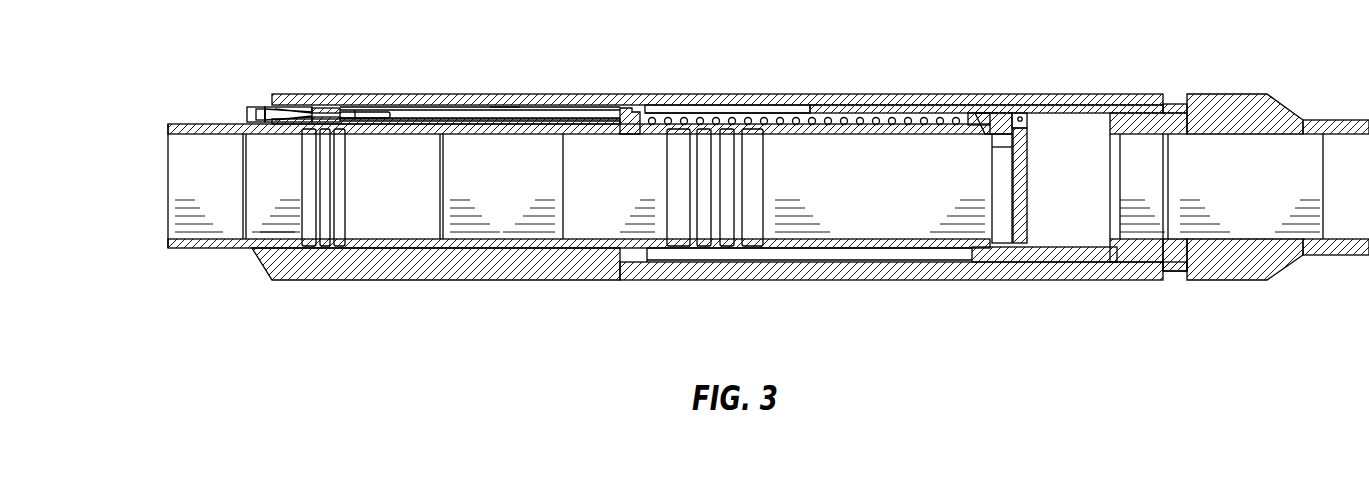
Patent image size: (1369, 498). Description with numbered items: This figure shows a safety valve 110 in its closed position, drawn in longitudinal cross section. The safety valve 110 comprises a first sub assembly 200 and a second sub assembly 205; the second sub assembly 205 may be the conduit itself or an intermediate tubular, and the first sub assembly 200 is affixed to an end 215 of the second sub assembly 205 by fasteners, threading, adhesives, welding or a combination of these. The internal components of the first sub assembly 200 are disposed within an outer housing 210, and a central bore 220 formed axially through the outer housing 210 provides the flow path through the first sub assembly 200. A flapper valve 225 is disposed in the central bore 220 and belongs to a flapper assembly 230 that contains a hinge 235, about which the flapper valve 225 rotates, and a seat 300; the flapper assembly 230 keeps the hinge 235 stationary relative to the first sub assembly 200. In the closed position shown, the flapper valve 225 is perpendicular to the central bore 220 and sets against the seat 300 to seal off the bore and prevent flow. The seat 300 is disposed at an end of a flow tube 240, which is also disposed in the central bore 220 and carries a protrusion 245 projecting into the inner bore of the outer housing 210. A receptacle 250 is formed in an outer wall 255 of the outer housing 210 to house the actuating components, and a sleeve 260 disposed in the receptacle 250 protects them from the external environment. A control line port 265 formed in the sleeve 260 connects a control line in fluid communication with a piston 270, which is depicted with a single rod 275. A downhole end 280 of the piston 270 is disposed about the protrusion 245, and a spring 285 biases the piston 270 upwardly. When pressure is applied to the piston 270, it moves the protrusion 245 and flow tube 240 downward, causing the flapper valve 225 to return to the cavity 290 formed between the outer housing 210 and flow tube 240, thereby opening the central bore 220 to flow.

The safety valve 110 is at (1110, 308).
The first sub assembly 200 is at (500, 281).
The second sub assembly 205 is at (1282, 120).
The outer housing 210 is at (313, 282).
The end 215 is at (1188, 98).
The central bore 220 is at (397, 168).
The flapper valve 225 is at (1025, 200).
The flapper assembly 230 is at (992, 113).
The hinge 235 is at (1035, 123).
The flow tube 240 is at (832, 258).
The protrusion 245 is at (647, 127).
The receptacle 250 is at (437, 103).
The outer wall 255 is at (742, 95).
The sleeve 260 is at (288, 102).
The control line port 265 is at (248, 111).
The piston 270 is at (372, 103).
The rod 275 is at (493, 110).
The downhole end 280 is at (625, 117).
The spring 285 is at (792, 112).
The cavity 290 is at (1102, 120).
The seat 300 is at (1000, 213).